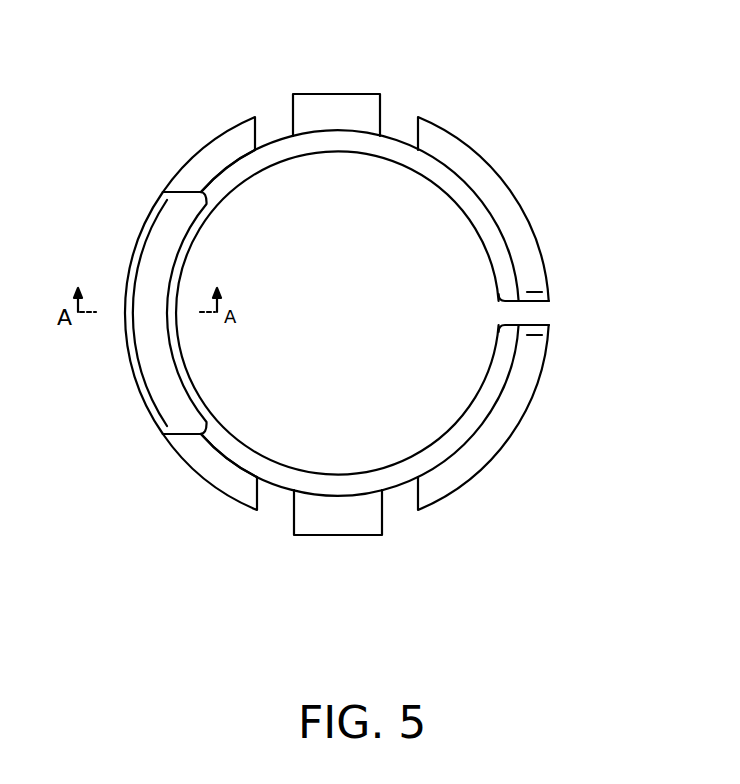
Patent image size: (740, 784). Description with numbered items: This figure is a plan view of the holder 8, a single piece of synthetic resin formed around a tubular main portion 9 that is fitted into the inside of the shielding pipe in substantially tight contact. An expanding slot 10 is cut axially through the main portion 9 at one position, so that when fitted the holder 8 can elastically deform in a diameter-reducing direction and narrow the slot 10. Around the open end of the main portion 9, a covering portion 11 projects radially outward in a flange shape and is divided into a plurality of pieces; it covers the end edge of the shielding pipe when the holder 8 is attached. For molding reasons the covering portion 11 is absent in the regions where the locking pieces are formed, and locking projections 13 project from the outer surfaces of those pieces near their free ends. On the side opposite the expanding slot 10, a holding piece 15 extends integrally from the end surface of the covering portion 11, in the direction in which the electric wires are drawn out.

The holder 8 is at (143, 448).
The main portion 9 is at (278, 467).
The expanding slot 10 is at (545, 313).
The covering portion 11 is at (527, 235).
The locking projection 13 is at (348, 100).
The holding piece 15 is at (150, 362).